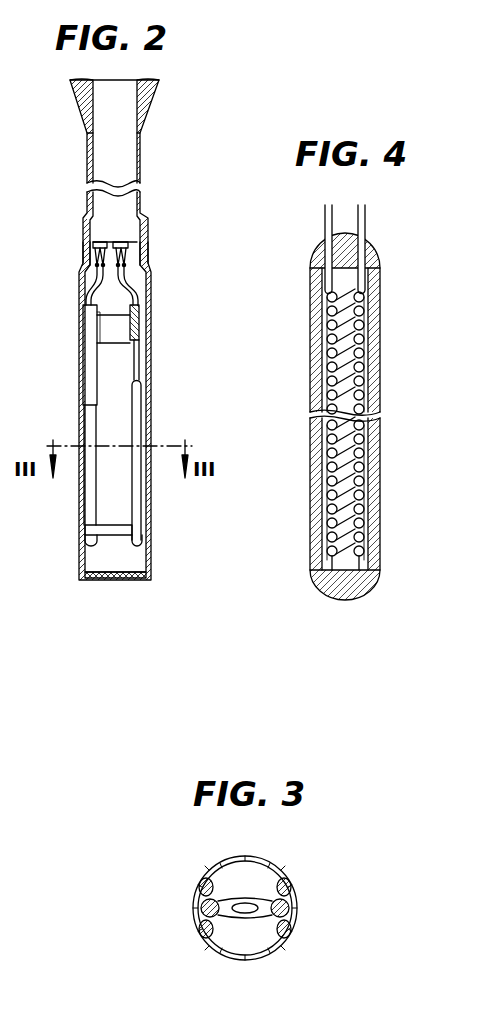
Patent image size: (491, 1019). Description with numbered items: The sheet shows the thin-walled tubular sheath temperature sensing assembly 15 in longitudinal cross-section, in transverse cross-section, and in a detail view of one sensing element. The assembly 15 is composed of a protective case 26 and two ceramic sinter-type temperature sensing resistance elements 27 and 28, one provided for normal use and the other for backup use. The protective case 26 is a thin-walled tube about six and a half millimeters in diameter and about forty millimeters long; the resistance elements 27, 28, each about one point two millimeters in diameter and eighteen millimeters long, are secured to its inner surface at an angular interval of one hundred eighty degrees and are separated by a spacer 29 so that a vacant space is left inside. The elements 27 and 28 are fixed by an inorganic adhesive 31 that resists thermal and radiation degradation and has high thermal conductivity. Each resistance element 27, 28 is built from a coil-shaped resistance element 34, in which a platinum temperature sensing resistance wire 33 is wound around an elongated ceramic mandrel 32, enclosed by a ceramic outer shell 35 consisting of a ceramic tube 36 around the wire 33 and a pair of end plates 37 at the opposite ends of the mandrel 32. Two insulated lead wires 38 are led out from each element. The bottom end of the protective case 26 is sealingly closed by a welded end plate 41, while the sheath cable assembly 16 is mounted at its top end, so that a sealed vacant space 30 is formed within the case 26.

In FIG. 2, the thin-walled tubular sheath temperature sensing assembly 15 is at (70, 372).
In FIG. 2, the sheath cable assembly 16 is at (133, 203).
In FIG. 2, the protective case 26 is at (140, 325).
In FIG. 3, the protective case 26 is at (283, 868).
In FIG. 2, the ceramic sinter-type temperature sensing resistance element 27 is at (88, 420).
In FIG. 3, the ceramic sinter-type temperature sensing resistance element 27 is at (204, 902).
In FIG. 2, the ceramic sinter-type temperature sensing resistance element 28 is at (141, 404).
In FIG. 3, the ceramic sinter-type temperature sensing resistance element 28 is at (287, 902).
In FIG. 2, the spacer 29 is at (110, 327).
In FIG. 3, the spacer 29 is at (250, 920).
In FIG. 3, the sealed vacant space 30 is at (218, 940).
In FIG. 3, the inorganic adhesive 31 is at (203, 882).
In FIG. 4, the ceramic mandrel 32 is at (355, 561).
In FIG. 4, the temperature sensing resistance wire 33 is at (336, 424).
In FIG. 4, the coil-shaped resistance element 34 is at (330, 332).
In FIG. 4, the ceramic outer shell 35 is at (381, 393).
In FIG. 4, the ceramic tube 36 is at (313, 530).
In FIG. 4, the end plate 37 is at (376, 250).
In FIG. 2, the insulated lead wire 38 is at (90, 288).
In FIG. 4, the insulated lead wire 38 is at (367, 218).
In FIG. 2, the end plate 41 is at (101, 577).